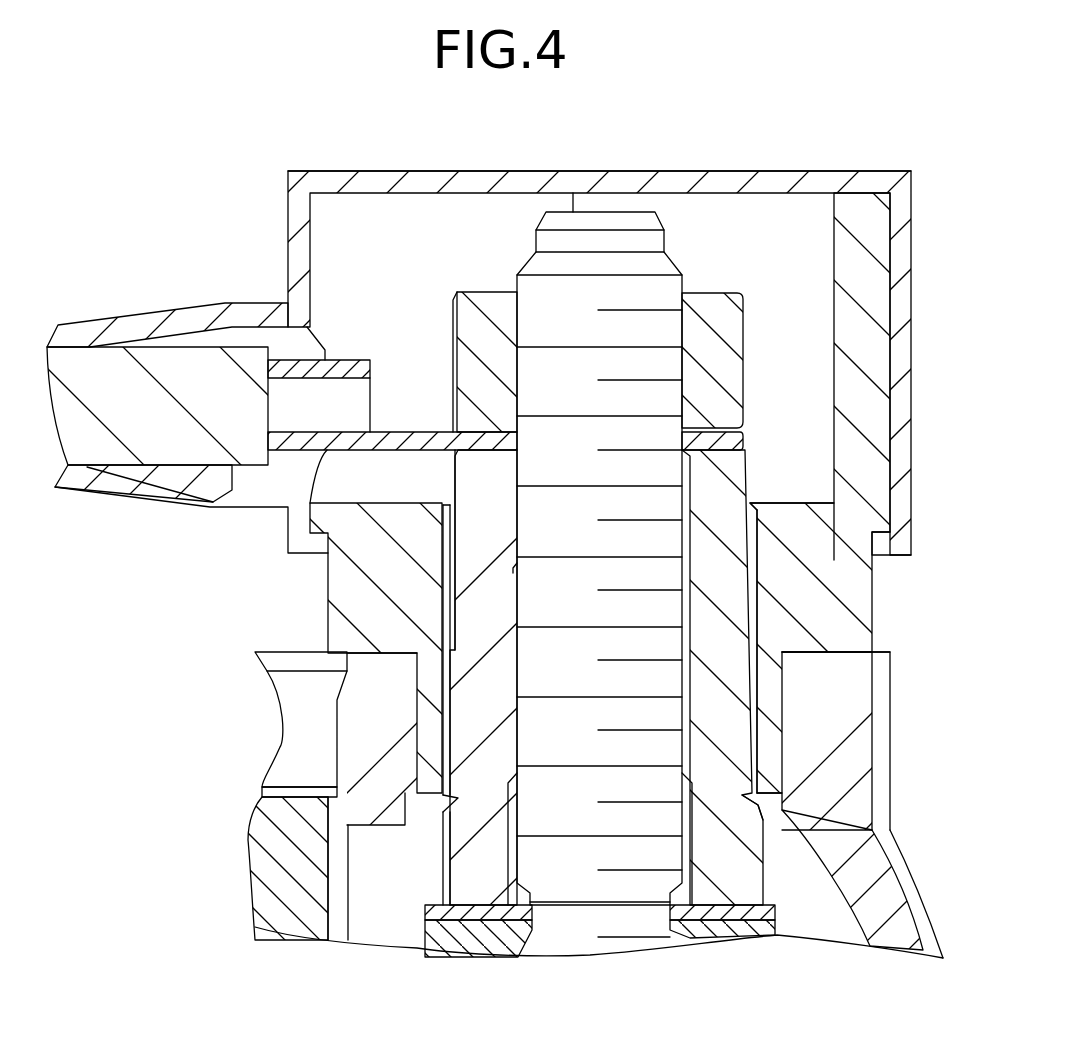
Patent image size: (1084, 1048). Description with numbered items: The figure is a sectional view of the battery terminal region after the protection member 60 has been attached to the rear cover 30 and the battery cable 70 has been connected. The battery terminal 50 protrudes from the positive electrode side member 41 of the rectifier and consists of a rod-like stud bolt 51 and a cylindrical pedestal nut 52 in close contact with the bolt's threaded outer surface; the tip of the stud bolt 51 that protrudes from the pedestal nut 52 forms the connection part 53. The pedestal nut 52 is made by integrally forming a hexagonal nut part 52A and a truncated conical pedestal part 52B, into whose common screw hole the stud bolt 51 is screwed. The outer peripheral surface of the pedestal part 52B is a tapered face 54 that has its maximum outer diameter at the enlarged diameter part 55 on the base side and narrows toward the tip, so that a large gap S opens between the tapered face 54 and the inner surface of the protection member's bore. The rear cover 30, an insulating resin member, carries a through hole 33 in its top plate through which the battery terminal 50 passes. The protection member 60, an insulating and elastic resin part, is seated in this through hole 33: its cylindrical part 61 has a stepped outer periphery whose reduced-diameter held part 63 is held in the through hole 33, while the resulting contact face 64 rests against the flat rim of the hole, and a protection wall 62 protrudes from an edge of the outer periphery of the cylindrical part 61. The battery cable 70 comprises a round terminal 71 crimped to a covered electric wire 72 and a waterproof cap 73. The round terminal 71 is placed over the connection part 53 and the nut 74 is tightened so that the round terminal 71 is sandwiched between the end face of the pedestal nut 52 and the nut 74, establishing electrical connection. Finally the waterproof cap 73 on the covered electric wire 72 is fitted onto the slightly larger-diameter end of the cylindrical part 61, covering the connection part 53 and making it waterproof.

The rear cover 30 is at (903, 847).
The through hole 33 is at (776, 657).
The positive electrode side member 41 is at (425, 947).
The battery terminal 50 is at (150, 592).
The stud bolt 51 is at (513, 587).
The pedestal nut 52 is at (196, 628).
The hexagonal nut part 52A is at (443, 842).
The pedestal part 52B is at (443, 630).
The connection part 53 is at (690, 327).
The tapered face 54 is at (752, 537).
The enlarged diameter part 55 is at (787, 808).
The protection member 60 is at (296, 572).
The cylindrical part 61 is at (874, 578).
The protection wall 62 is at (900, 408).
The held part 63 is at (783, 713).
The contact face 64 is at (850, 652).
The battery cable 70 is at (274, 168).
The round terminal 71 is at (407, 405).
The covered electric wire 72 is at (183, 340).
The waterproof cap 73 is at (427, 170).
The nut 74 is at (716, 293).
The gap S is at (755, 612).